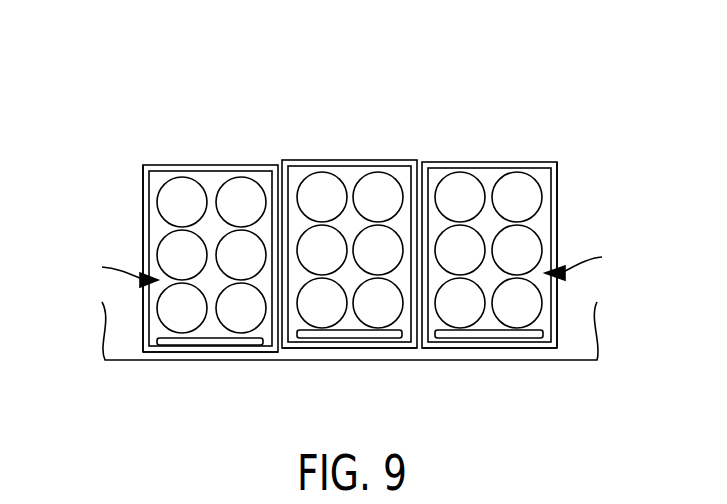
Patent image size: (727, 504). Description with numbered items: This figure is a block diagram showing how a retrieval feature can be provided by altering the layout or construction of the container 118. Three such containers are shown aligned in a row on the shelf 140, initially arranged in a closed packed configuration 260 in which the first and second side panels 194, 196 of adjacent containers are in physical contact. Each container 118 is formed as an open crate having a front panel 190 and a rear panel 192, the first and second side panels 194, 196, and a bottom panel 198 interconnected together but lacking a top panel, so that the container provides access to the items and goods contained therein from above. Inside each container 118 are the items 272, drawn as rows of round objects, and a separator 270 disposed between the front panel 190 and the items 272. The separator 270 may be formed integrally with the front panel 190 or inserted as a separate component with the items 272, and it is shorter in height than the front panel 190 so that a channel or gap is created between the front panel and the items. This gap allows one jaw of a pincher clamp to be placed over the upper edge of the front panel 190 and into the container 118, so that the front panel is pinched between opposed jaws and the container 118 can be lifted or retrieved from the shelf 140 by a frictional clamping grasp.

The closed packed configuration 260 is at (580, 72).
The container 118 is at (158, 165).
The rear panel 192 is at (208, 165).
The first side panel 194 is at (283, 162).
The second side panel 196 is at (143, 207).
The bottom panel 198 is at (352, 263).
The items 272 is at (192, 265).
The separator 270 is at (253, 340).
The front panel 190 is at (160, 354).
The shelf 140 is at (592, 353).